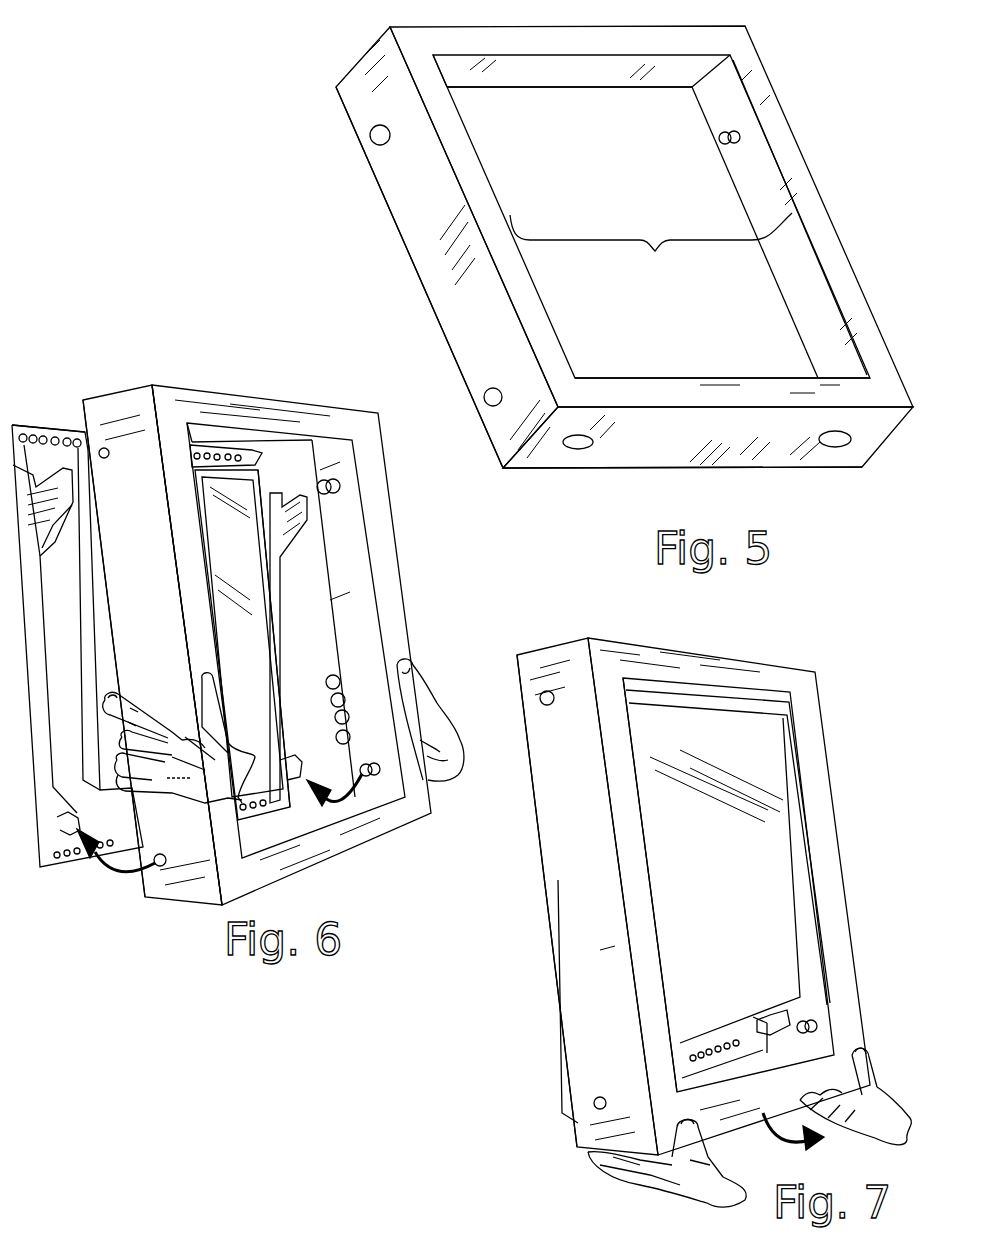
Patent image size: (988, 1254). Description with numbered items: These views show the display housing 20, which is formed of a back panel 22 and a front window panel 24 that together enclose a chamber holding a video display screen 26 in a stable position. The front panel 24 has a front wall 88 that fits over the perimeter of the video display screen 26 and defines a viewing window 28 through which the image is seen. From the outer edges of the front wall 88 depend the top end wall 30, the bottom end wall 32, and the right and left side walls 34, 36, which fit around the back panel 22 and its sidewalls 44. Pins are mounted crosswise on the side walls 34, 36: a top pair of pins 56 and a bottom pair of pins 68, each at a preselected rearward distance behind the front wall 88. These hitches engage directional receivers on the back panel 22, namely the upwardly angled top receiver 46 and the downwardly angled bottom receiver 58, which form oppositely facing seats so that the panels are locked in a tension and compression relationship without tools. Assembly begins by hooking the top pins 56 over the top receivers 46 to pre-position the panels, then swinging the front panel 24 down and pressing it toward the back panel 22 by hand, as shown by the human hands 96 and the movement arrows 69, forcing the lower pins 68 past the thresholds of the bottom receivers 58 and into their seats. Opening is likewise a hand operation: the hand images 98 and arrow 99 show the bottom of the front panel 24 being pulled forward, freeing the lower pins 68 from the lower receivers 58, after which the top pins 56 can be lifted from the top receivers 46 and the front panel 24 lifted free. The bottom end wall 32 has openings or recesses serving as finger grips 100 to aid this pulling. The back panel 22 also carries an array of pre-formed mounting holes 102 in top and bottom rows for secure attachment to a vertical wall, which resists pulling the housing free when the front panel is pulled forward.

In FIG. 6, the display housing 20 is at (70, 350).
In FIG. 7, the display housing 20 is at (878, 746).
In FIG. 6, the back panel 22 is at (266, 690).
In FIG. 7, the back panel 22 is at (563, 1055).
In FIG. 5, the front window panel 24 is at (328, 178).
In FIG. 6, the front window panel 24 is at (268, 406).
In FIG. 7, the front window panel 24 is at (580, 912).
In FIG. 6, the video display screen 26 is at (251, 642).
In FIG. 7, the video display screen 26 is at (735, 871).
In FIG. 5, the viewing window 28 is at (651, 251).
In FIG. 5, the top end wall 30 is at (598, 80).
In FIG. 5, the bottom end wall 32 is at (637, 447).
In FIG. 5, the right side wall 34 is at (807, 285).
In FIG. 5, the left side wall 36 is at (430, 243).
In FIG. 6, the left side wall 36 is at (163, 617).
In FIG. 7, the left side wall 36 is at (601, 835).
In FIG. 6, the sidewall 44 is at (37, 602).
In FIG. 6, the top receiver 46 is at (272, 524).
In FIG. 5, the top pin 56 is at (385, 144).
In FIG. 6, the top pin 56 is at (108, 458).
In FIG. 7, the top pin 56 is at (550, 706).
In FIG. 6, the bottom receiver 58 is at (302, 760).
In FIG. 7, the bottom receiver 58 is at (780, 1010).
In FIG. 5, the bottom pin 68 is at (493, 388).
In FIG. 6, the bottom pin 68 is at (165, 856).
In FIG. 7, the bottom pin 68 is at (602, 1096).
In FIG. 6, the movement arrows 69 is at (88, 870).
In FIG. 5, the front wall 88 is at (697, 388).
In FIG. 6, the front wall 88 is at (188, 524).
In FIG. 7, the front wall 88 is at (646, 962).
In FIG. 6, the human hands 96 is at (157, 705).
In FIG. 7, the hand images 98 is at (638, 1177).
In FIG. 7, the arrow 99 is at (785, 1145).
In FIG. 5, the finger grips 100 is at (578, 449).
In FIG. 6, the mounting holes 102 is at (60, 432).